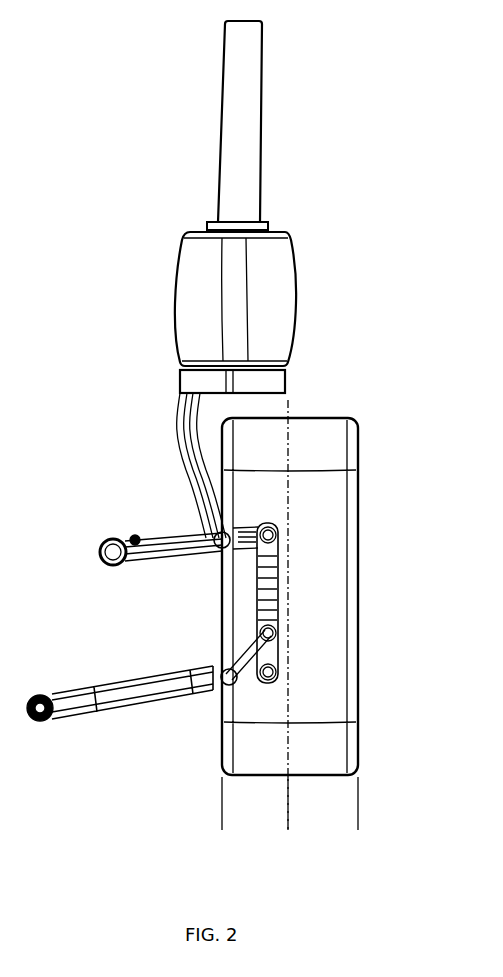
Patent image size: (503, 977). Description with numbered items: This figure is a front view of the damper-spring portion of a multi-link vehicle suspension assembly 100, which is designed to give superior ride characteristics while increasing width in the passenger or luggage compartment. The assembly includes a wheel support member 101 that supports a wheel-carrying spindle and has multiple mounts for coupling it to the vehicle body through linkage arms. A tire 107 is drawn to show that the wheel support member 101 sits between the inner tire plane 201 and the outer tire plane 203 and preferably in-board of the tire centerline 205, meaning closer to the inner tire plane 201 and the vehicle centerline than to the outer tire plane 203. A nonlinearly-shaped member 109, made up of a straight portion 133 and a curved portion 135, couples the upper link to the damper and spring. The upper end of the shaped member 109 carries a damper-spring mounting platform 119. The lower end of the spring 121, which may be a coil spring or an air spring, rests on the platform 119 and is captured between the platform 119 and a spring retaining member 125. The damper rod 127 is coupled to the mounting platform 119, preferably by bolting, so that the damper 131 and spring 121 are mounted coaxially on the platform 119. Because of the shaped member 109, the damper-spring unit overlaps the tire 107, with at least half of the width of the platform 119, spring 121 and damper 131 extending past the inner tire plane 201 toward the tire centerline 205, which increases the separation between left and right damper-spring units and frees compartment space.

The multi-link vehicle suspension assembly 100 is at (126, 162).
The wheel support member 101 is at (272, 582).
The tire 107 is at (318, 442).
The nonlinearly-shaped member 109 is at (162, 462).
The damper-spring mounting platform 119 is at (268, 383).
The spring 121 is at (226, 299).
The spring retaining member 125 is at (268, 226).
The damper rod 127 is at (232, 305).
The damper 131 is at (240, 105).
The straight portion 133 is at (212, 515).
The curved portion 135 is at (176, 420).
The inner tire plane 201 is at (212, 819).
The outer tire plane 203 is at (349, 820).
The tire centerline 205 is at (278, 819).